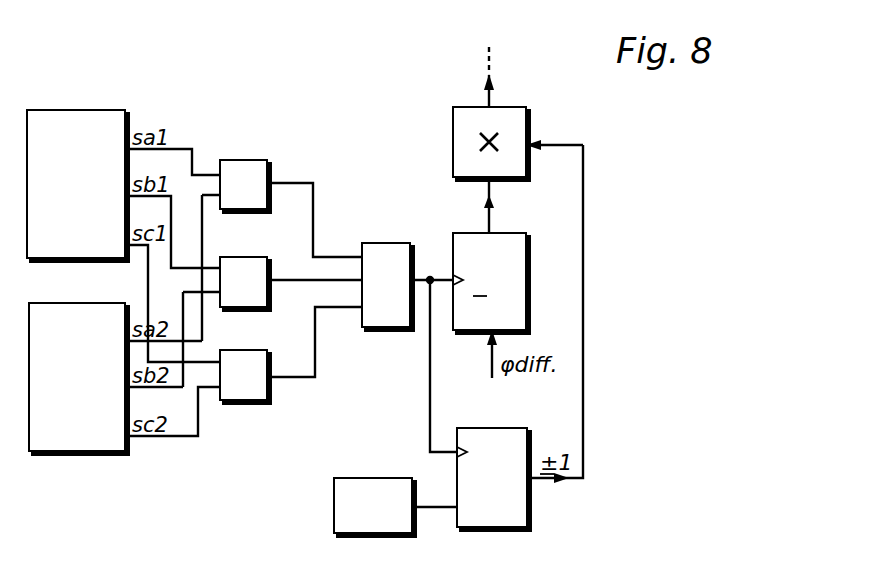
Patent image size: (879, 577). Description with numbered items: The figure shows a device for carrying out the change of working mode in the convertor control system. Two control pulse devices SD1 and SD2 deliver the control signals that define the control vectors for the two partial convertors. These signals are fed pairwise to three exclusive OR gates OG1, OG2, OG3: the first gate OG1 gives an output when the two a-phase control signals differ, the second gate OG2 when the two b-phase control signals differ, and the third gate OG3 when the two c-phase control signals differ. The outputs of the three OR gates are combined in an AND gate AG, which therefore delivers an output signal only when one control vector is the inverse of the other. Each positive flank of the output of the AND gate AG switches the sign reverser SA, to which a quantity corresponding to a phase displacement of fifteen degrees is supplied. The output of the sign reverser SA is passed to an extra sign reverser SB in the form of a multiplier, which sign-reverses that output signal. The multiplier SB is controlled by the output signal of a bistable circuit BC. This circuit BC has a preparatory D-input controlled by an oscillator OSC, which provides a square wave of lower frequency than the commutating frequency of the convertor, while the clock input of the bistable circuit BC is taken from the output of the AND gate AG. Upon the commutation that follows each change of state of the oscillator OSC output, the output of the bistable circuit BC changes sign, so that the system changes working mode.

The control pulse device SD1 is at (88, 250).
The control pulse device SD2 is at (88, 445).
The exclusive OR gate OG1 is at (276, 155).
The exclusive OR gate OG2 is at (277, 251).
The exclusive OR gate OG3 is at (278, 345).
The AND gate AG is at (384, 238).
The switchable sign reverser SA is at (497, 327).
The extra sign reverser SB is at (522, 105).
The bistable circuit BC is at (530, 512).
The oscillator OSC is at (402, 519).